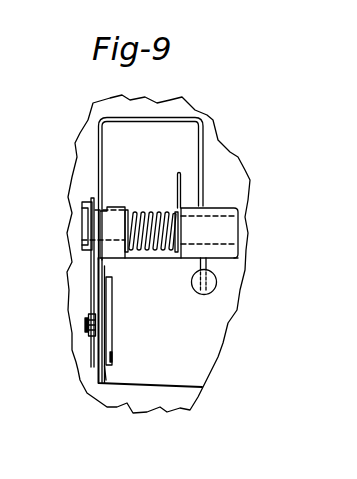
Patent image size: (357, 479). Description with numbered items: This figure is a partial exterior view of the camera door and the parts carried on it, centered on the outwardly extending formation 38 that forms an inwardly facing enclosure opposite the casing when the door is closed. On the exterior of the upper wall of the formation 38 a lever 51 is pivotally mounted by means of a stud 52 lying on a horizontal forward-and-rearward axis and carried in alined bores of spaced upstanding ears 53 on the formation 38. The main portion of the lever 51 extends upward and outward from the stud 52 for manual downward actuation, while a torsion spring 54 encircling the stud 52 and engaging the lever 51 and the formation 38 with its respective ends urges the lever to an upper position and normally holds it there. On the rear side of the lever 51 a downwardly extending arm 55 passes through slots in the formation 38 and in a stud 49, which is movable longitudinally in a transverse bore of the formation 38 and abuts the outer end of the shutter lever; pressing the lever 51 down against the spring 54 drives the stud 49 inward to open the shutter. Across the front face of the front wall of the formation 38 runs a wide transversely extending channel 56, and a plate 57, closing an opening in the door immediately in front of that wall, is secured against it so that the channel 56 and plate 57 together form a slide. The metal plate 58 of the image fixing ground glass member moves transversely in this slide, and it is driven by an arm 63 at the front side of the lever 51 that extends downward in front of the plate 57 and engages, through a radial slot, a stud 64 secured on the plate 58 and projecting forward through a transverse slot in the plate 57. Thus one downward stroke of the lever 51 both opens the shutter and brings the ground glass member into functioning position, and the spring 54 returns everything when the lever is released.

The formation 38 is at (150, 343).
The stud 49 is at (210, 293).
The lever 51 is at (117, 127).
The stud 52 is at (87, 227).
The upstanding ears 53 is at (110, 205).
The torsion spring 54 is at (150, 213).
The downwardly extending arm 55 is at (206, 202).
The channel 56 is at (106, 369).
The plate 57 is at (97, 345).
The metal plate 58 is at (107, 352).
The arm 63 is at (92, 290).
The stud 64 is at (86, 318).